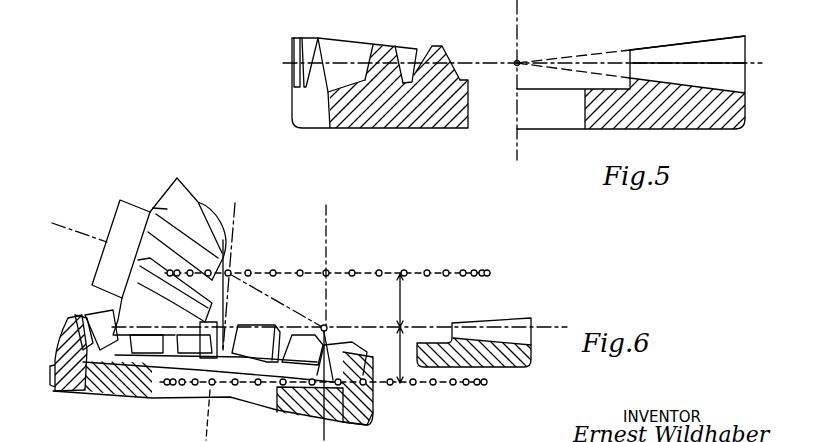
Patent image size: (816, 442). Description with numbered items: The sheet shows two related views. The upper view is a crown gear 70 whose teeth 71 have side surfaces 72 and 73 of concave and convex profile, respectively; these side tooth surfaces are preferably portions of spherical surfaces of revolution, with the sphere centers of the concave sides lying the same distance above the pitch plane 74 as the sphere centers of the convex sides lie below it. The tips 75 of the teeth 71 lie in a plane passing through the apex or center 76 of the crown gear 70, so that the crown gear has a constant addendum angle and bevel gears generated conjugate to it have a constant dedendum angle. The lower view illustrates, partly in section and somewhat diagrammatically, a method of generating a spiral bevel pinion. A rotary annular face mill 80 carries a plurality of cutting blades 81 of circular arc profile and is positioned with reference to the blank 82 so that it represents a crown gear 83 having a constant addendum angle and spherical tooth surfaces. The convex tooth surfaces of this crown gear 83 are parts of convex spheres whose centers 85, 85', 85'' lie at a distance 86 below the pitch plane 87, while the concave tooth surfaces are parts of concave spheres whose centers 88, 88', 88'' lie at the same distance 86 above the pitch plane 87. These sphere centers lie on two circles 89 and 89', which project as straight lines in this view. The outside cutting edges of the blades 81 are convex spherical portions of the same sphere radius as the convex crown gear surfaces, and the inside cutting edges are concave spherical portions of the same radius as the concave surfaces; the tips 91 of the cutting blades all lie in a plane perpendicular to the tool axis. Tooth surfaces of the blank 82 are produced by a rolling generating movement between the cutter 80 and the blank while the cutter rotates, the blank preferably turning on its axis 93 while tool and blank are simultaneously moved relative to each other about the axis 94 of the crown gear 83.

In FIG. 5, the crown gear 70 is at (562, 123).
In FIG. 5, the teeth 71 is at (374, 63).
In FIG. 5, the side surface 72 is at (449, 55).
In FIG. 5, the side surface 73 is at (371, 62).
In FIG. 5, the pitch plane 74 is at (733, 63).
In FIG. 5, the tips 75 is at (702, 41).
In FIG. 5, the apex or center 76 is at (520, 62).
In FIG. 6, the rotary annular face mill 80 is at (158, 394).
In FIG. 6, the cutting blades 81 is at (353, 351).
In FIG. 6, the blank 82 is at (132, 213).
In FIG. 6, the crown gear 83 is at (526, 325).
In FIG. 6, the center 85 is at (323, 405).
In FIG. 6, the center 85' is at (229, 410).
In FIG. 6, the center 85'' is at (264, 410).
In FIG. 6, the distance 86 is at (401, 299).
In FIG. 6, the pitch plane 87 is at (547, 334).
In FIG. 6, the center 88 is at (327, 255).
In FIG. 6, the center 88' is at (266, 258).
In FIG. 6, the center 88'' is at (293, 261).
In FIG. 6, the circle 89 is at (383, 399).
In FIG. 6, the circle 89' is at (393, 261).
In FIG. 6, the tips 91 is at (69, 317).
In FIG. 6, the axis 93 is at (79, 219).
In FIG. 6, the axis 94 is at (328, 251).